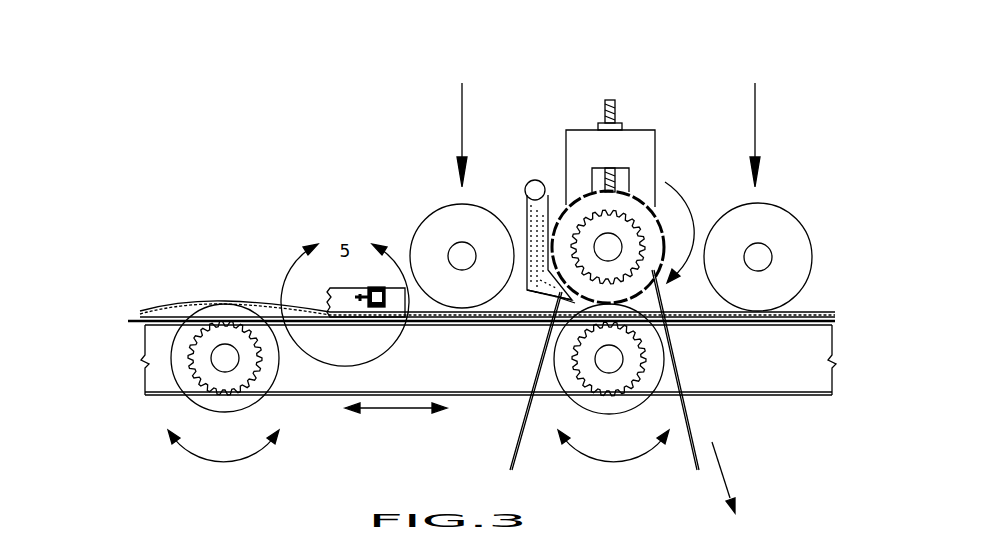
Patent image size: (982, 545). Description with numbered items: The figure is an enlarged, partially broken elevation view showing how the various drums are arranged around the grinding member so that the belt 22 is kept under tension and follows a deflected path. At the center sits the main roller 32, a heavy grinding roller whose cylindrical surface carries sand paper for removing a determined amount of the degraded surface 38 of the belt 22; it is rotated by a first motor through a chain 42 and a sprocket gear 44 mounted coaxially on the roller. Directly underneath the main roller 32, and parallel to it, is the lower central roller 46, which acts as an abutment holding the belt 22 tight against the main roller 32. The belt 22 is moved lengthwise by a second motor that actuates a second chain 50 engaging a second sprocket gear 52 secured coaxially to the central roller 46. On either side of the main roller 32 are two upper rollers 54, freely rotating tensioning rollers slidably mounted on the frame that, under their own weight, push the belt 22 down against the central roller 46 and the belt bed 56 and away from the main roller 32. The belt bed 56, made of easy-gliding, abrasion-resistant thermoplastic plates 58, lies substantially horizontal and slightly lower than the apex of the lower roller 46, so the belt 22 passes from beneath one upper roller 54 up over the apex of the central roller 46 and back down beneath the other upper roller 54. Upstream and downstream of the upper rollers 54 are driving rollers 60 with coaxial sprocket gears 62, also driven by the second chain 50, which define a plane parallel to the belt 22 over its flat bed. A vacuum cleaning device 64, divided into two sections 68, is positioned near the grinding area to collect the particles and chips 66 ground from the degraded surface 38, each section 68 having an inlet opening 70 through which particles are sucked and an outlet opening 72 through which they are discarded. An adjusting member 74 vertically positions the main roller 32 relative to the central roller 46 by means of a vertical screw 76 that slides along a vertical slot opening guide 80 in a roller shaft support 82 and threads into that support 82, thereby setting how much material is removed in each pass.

The belt 22 is at (183, 307).
The main roller 32 is at (666, 237).
The degraded surface 38 is at (243, 303).
The chain 42 is at (526, 414).
The sprocket gear 44 is at (590, 213).
The lower central roller 46 is at (645, 400).
The second chain 50 is at (787, 393).
The second sprocket gear 52 is at (645, 366).
The upper rollers 54 is at (426, 218).
The belt bed 56 is at (125, 321).
The thermoplastic plates 58 is at (798, 318).
The driving rollers 60 is at (172, 366).
The sprocket gear 62 is at (260, 358).
The vacuum cleaning device 64 is at (523, 290).
The particles and chips 66 is at (525, 202).
The sections 68 is at (525, 222).
The inlet opening 70 is at (562, 326).
The outlet opening 72 is at (538, 180).
The adjusting member 74 is at (647, 112).
The vertical screw 76 is at (607, 100).
The vertical slot opening guide 80 is at (627, 177).
The roller shaft support 82 is at (647, 130).